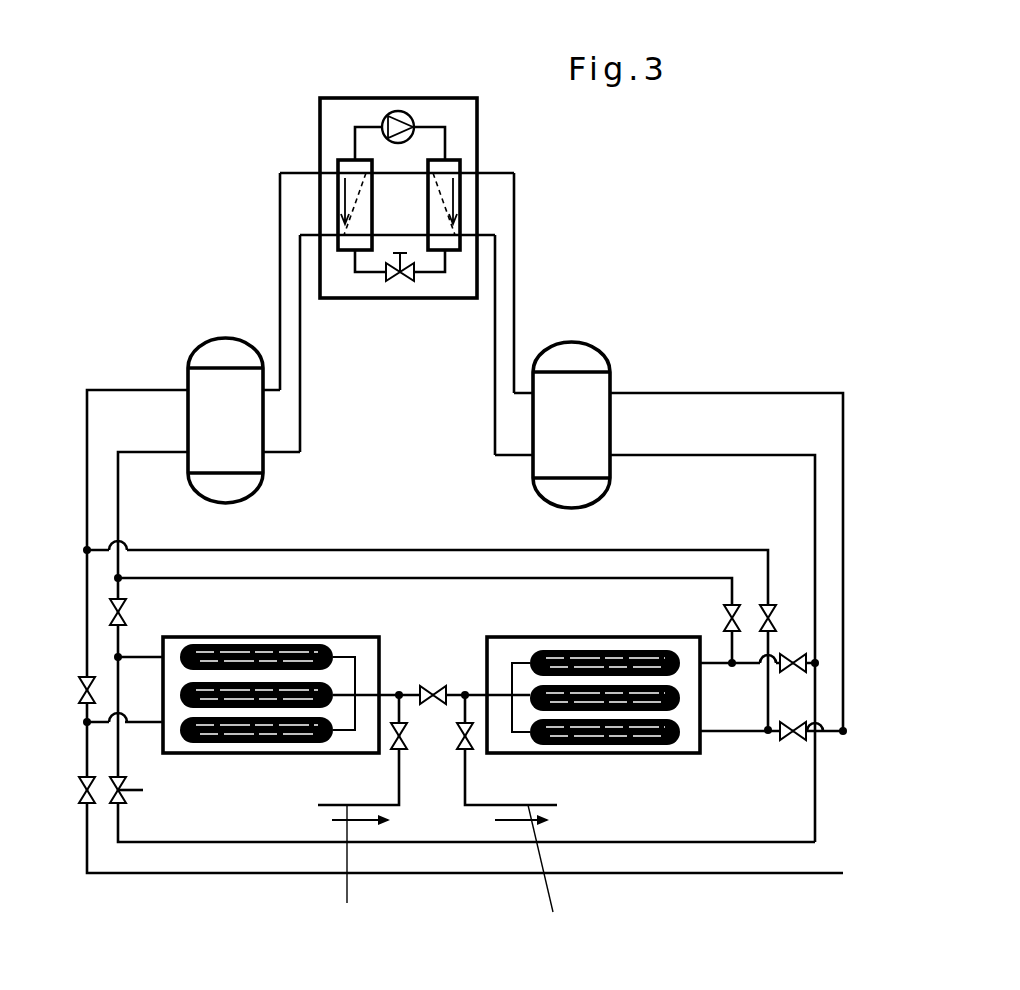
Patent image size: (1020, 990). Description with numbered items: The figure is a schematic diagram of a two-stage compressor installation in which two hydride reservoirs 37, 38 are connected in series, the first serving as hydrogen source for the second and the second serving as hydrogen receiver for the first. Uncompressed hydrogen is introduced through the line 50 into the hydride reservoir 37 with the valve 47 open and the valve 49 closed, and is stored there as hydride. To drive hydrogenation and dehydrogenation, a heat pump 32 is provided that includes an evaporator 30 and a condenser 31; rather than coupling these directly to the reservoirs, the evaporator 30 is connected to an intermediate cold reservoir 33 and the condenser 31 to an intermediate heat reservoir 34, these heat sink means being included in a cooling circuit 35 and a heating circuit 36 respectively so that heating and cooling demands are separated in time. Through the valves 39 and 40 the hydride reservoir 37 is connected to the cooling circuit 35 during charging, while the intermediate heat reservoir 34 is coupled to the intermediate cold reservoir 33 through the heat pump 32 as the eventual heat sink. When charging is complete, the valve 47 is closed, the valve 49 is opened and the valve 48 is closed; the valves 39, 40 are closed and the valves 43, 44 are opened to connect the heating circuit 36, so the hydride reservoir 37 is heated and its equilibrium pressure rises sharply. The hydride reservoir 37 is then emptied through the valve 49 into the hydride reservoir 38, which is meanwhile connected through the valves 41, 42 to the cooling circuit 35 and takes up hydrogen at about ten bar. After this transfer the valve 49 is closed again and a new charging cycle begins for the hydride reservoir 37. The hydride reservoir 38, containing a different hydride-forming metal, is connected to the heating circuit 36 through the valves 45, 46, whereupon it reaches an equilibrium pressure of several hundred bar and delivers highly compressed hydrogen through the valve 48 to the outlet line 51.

The evaporator 30 is at (350, 197).
The condenser 31 is at (437, 198).
The heat pump 32 is at (431, 112).
The intermediate cold reservoir 33 is at (222, 357).
The intermediate heat reservoir 34 is at (583, 360).
The cooling circuit 35 is at (130, 452).
The heating circuit 36 is at (708, 455).
The hydride reservoir 37 is at (237, 745).
The hydride reservoir 38 is at (610, 750).
The valve 39 is at (85, 677).
The valve 40 is at (110, 612).
The valve 41 is at (737, 608).
The valve 42 is at (772, 620).
The valve 43 is at (85, 775).
The valve 44 is at (143, 790).
The valve 45 is at (800, 668).
The valve 46 is at (800, 736).
The valve 47 is at (402, 749).
The valve 48 is at (468, 749).
The valve 49 is at (436, 705).
The line 50 is at (349, 871).
The fluid outlet line 51 is at (552, 874).